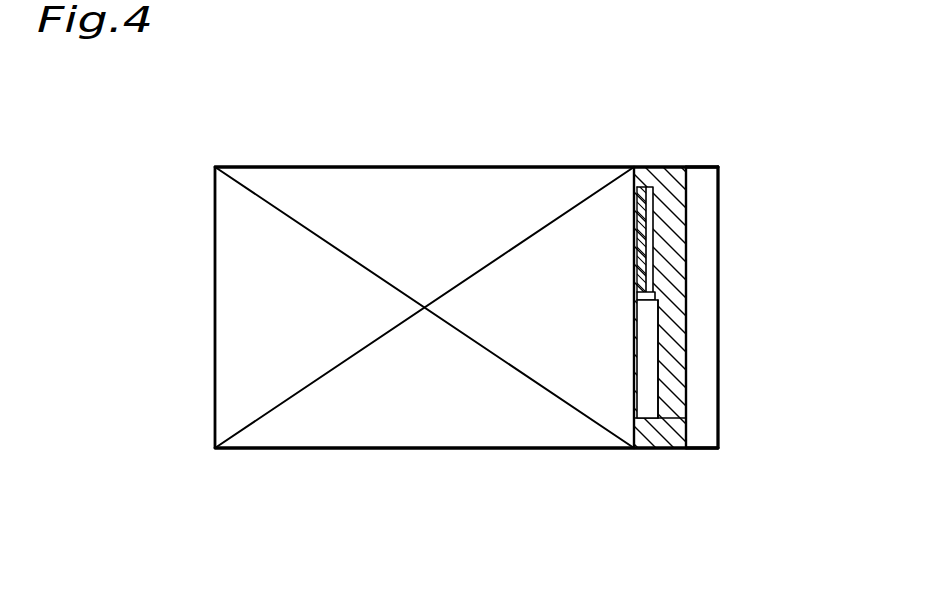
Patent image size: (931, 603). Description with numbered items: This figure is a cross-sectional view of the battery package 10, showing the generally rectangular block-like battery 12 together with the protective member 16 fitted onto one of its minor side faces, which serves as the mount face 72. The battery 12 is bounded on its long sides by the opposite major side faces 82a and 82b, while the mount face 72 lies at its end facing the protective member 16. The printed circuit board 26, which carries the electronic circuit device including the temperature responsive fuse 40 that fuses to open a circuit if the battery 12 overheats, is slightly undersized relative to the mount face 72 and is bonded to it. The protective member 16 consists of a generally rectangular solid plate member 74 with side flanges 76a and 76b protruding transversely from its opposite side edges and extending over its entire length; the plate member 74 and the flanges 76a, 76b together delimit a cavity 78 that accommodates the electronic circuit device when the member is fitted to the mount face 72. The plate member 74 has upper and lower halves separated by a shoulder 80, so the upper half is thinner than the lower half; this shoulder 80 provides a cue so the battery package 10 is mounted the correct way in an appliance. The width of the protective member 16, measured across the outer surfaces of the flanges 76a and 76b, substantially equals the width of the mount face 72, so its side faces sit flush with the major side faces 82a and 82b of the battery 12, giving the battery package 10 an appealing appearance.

The battery package 10 is at (210, 366).
The battery 12 is at (412, 180).
The protective member 16 is at (719, 282).
The printed circuit board 26 is at (642, 210).
The temperature responsive fuse 40 is at (645, 380).
The mount face 72 is at (643, 343).
The solid plate member 74 is at (719, 213).
The side flange 76a is at (661, 448).
The side flange 76b is at (665, 167).
The cavity 78 is at (665, 295).
The shoulder 80 is at (700, 348).
The major side face 82a is at (306, 448).
The major side face 82b is at (325, 167).